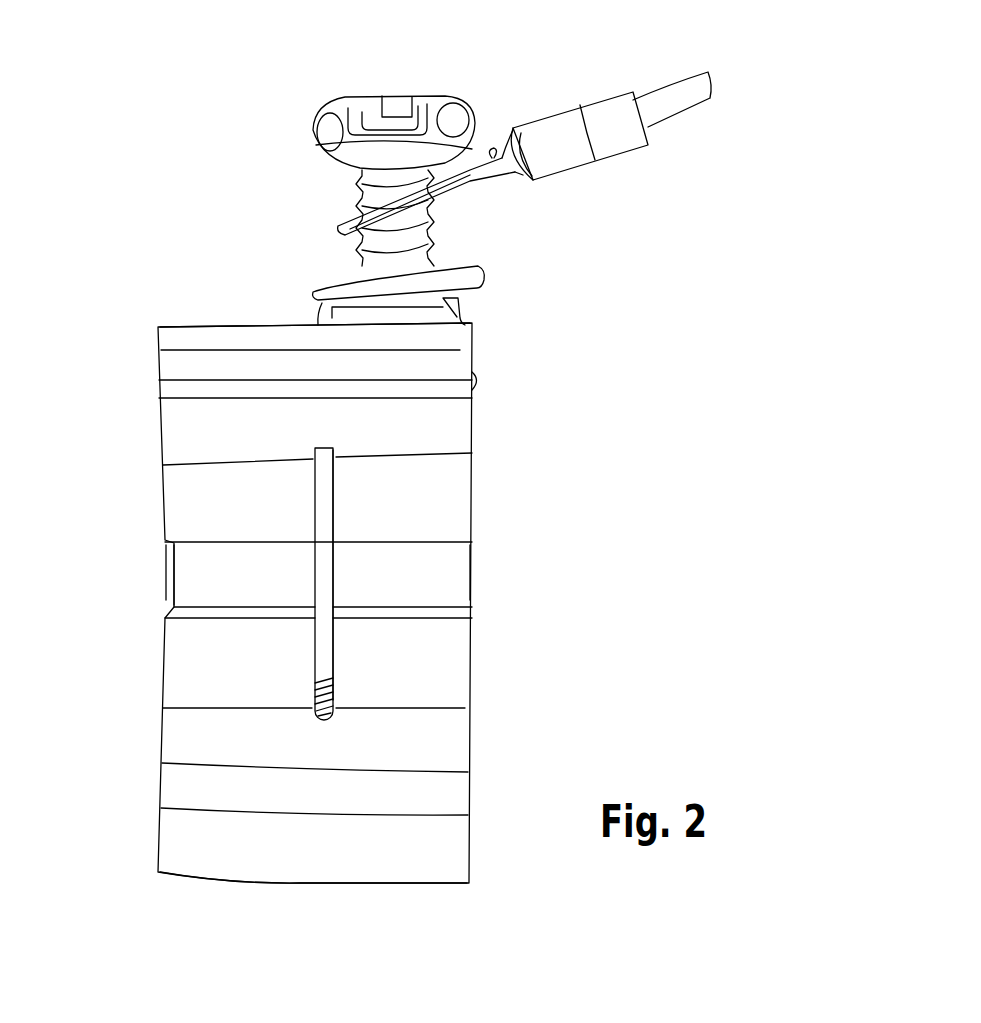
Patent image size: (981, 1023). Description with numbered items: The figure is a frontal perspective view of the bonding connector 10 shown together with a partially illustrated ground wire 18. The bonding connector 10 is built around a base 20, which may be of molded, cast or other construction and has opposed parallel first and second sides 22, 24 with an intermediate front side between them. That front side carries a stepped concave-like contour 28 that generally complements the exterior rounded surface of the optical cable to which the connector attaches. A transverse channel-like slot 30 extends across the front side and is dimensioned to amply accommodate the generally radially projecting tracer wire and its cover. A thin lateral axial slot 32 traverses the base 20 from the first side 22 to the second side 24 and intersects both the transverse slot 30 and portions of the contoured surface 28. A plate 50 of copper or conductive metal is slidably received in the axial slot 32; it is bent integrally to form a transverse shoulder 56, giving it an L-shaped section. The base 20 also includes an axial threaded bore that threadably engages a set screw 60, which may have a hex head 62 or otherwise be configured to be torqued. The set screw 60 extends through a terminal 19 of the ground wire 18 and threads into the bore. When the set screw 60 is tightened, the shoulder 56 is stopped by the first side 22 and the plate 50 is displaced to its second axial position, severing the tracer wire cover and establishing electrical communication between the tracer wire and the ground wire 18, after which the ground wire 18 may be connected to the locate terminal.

The bonding connector 10 is at (188, 128).
The ground wire 18 is at (665, 100).
The terminal 19 is at (445, 190).
The base 20 is at (145, 690).
The first side 22 is at (228, 325).
The second side 24 is at (285, 882).
The stepped concave-like contour 28 is at (466, 510).
The transverse channel-like slot 30 is at (186, 582).
The thin lateral axial slot 32 is at (320, 480).
The plate 50 is at (330, 576).
The transverse shoulder 56 is at (458, 316).
The set screw 60 is at (434, 231).
The hex head 62 is at (347, 100).